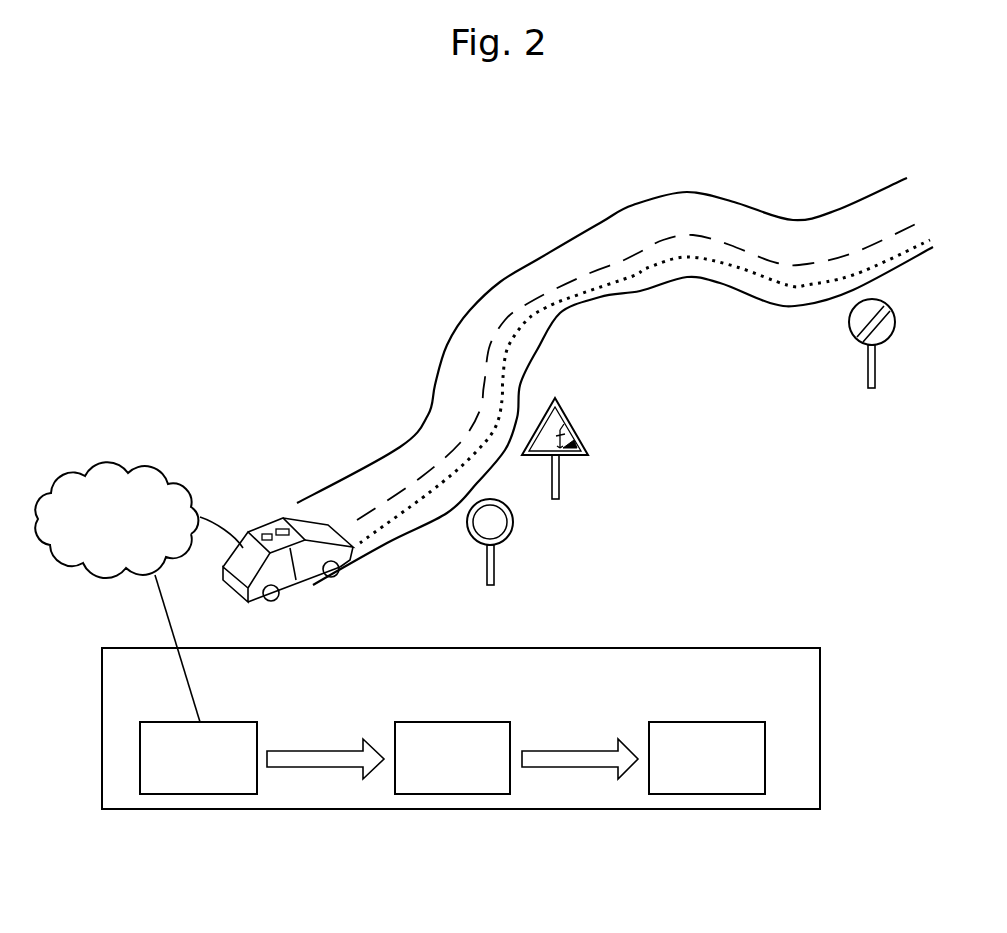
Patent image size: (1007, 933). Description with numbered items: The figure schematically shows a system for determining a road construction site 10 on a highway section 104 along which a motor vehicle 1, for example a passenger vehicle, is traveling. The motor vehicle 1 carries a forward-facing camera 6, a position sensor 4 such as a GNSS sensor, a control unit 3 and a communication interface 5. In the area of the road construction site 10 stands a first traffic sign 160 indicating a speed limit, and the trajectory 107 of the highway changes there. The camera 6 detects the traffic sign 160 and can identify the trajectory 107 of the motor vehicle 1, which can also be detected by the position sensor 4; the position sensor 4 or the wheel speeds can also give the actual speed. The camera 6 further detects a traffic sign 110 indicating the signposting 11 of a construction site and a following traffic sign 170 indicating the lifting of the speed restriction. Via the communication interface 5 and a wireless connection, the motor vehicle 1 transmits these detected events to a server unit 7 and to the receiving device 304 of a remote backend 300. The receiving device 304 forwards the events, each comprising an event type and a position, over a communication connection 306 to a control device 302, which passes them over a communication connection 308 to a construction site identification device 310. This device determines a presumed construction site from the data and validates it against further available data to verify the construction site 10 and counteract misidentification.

The motor vehicle 1 is at (383, 562).
The control unit 3 is at (288, 547).
The position sensor 4 is at (267, 534).
The communication interface 5 is at (288, 527).
The forward-facing camera 6 is at (283, 528).
The server unit 7 is at (113, 452).
The road construction site 10 is at (585, 245).
The signposting of a construction site 11 is at (707, 442).
The highway section 104 is at (385, 477).
The trajectory 107 is at (647, 270).
The further traffic sign 110 is at (583, 430).
The first traffic sign 160 is at (508, 538).
The second traffic sign 170 is at (849, 323).
The remote backend 300 is at (755, 630).
The control device 302 is at (450, 722).
The receiving device 304 is at (140, 763).
The communication connection 306 is at (313, 750).
The communication connection 308 is at (566, 750).
The construction site identification device 310 is at (705, 722).